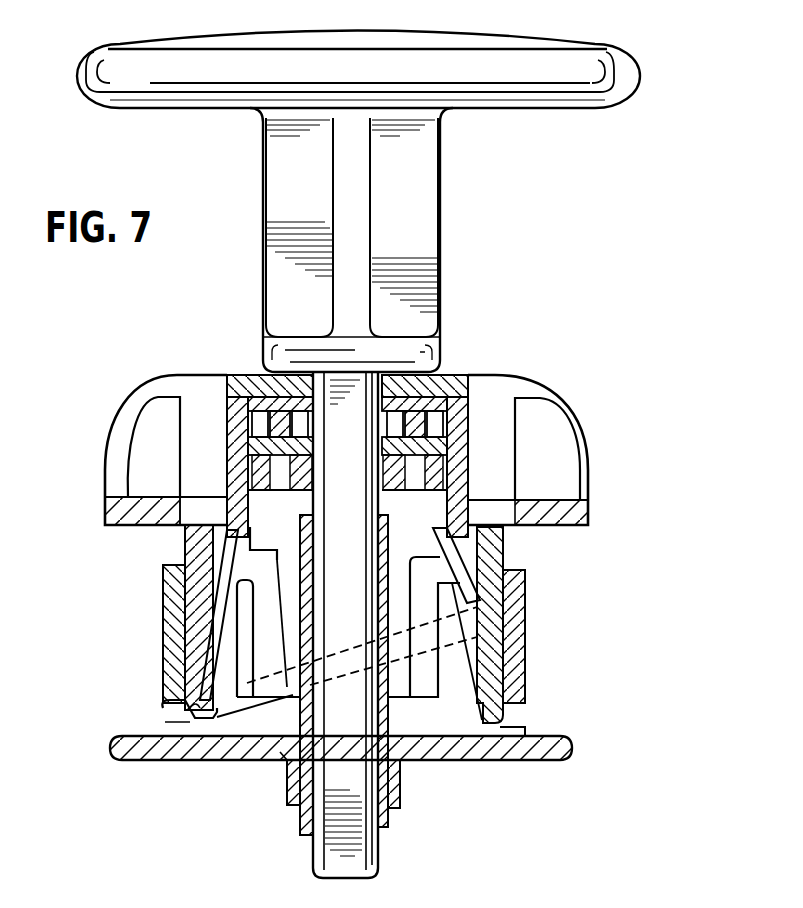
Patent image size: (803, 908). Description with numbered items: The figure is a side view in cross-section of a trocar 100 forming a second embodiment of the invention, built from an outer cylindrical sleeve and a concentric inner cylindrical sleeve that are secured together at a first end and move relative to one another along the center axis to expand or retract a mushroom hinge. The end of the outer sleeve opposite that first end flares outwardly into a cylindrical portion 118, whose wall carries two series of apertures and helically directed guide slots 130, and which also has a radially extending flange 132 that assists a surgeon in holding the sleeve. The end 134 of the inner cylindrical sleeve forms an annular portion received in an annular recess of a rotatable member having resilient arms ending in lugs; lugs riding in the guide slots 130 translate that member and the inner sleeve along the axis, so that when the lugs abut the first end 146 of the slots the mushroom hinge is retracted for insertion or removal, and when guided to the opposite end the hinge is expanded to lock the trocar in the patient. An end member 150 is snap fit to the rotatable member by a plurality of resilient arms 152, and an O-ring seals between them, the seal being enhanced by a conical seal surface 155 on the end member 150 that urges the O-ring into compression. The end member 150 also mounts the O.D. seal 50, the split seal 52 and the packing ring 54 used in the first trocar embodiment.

The trocar 100 is at (509, 362).
The end member 150 is at (590, 440).
The conical seal surface 155 is at (232, 502).
The packing ring 54 is at (435, 403).
The O.D. seal 50 is at (228, 412).
The split seal 52 is at (432, 456).
The resilient arms 152 is at (478, 553).
The first end of the guide slots 146 is at (205, 712).
The guide slots 130 is at (460, 628).
The end of inner cylindrical sleeve 134 is at (398, 824).
The radially extending flange 132 is at (572, 750).
The cylindrical portion 118 is at (426, 766).